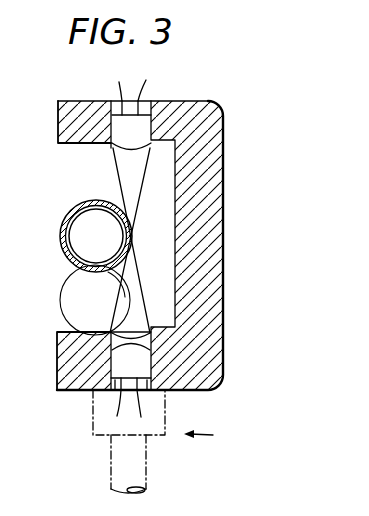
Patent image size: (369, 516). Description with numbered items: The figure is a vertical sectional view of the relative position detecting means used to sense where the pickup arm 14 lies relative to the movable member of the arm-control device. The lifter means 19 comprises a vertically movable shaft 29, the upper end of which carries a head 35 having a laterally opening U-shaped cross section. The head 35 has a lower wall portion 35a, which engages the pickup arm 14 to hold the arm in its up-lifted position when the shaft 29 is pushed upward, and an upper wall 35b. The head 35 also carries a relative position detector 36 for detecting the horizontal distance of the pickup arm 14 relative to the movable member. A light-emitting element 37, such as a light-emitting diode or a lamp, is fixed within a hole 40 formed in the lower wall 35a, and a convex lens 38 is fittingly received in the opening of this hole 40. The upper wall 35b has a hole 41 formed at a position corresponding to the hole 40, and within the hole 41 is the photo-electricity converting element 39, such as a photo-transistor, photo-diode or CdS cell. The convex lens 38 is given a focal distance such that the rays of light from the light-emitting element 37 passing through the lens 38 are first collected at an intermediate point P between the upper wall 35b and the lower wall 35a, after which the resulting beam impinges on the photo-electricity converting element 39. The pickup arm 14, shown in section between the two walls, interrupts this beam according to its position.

The pickup arm 14 is at (58, 318).
The lifter means 19 is at (215, 438).
The shaft 29 is at (147, 473).
The head 35 is at (223, 234).
The lower wall portion 35a is at (78, 385).
The upper wall 35b is at (78, 101).
The relative position detector 36 is at (61, 184).
The light-emitting element 37 is at (144, 370).
The convex lens 38 is at (147, 334).
The photo-electricity converting element 39 is at (118, 151).
The hole 40 is at (109, 394).
The hole 41 is at (145, 104).
The intermediate point P is at (131, 236).